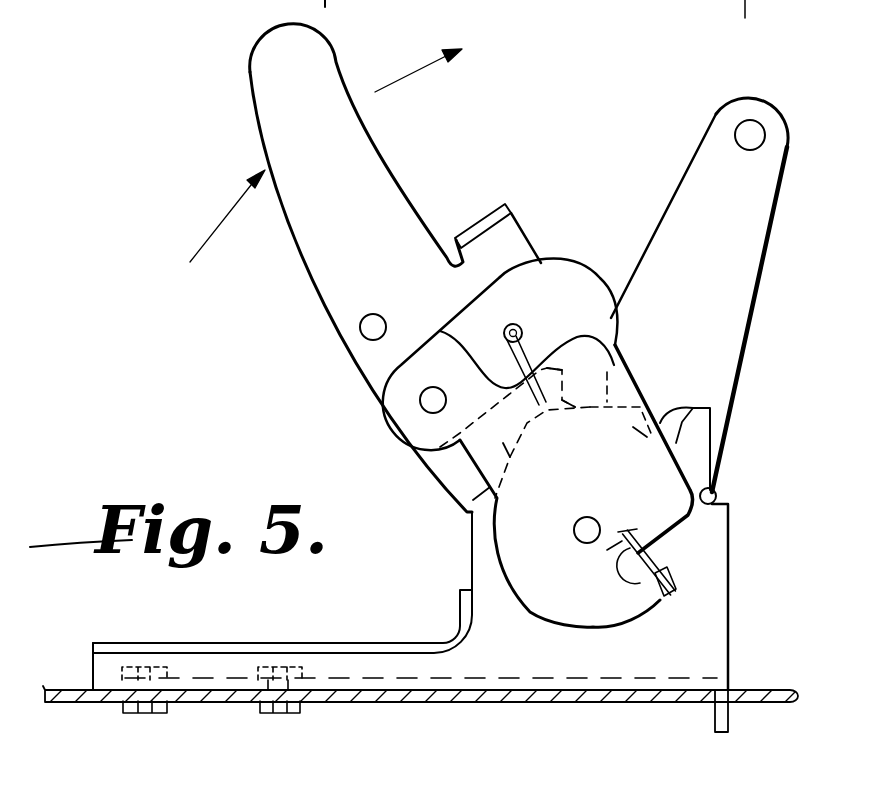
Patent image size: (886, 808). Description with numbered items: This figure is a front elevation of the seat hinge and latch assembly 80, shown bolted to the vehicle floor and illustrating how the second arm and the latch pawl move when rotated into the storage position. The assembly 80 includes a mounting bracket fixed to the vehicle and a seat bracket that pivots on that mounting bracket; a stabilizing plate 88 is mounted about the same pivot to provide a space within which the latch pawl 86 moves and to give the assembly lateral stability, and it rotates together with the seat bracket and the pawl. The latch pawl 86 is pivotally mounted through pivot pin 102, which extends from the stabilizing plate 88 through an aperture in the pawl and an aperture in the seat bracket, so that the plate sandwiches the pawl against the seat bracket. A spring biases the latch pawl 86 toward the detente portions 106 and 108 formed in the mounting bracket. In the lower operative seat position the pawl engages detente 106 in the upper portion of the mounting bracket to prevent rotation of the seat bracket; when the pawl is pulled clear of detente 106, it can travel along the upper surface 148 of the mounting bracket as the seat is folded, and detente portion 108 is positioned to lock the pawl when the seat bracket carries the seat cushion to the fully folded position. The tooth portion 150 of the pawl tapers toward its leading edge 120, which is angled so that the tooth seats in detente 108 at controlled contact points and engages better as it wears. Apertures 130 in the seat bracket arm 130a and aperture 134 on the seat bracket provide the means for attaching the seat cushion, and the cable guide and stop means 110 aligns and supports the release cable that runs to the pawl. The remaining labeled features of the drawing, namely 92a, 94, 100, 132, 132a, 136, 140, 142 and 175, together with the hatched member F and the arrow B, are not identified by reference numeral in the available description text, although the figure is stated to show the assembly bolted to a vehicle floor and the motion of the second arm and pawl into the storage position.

The seat hinge and latch assembly 80 is at (485, 402).
The latch pawl 86 is at (447, 326).
The stabilizing plate 88 is at (512, 496).
The base plate 92a is at (172, 643).
The mounting bracket 94 is at (423, 660).
The pivot pin 100 is at (587, 543).
The pivot pin 102 is at (420, 398).
The detente portion 106 is at (503, 450).
The detente portion 108 is at (712, 405).
The cable guide means and stop means 110 is at (465, 232).
The leading edge 120 is at (603, 410).
The apertures 130 is at (307, 268).
The seat bracket arm 130a is at (267, 96).
The link arm 132 is at (736, 267).
The link arm edge 132a is at (757, 246).
The aperture 134 is at (398, 300).
The side wall 136 is at (715, 711).
The bolt 140 is at (262, 704).
The bolt 142 is at (122, 706).
The upper surface 148 is at (552, 412).
The tooth portion 150 is at (587, 368).
The locating pin 175 is at (763, 692).
The floor F is at (536, 698).
The direction arrow B is at (433, 60).